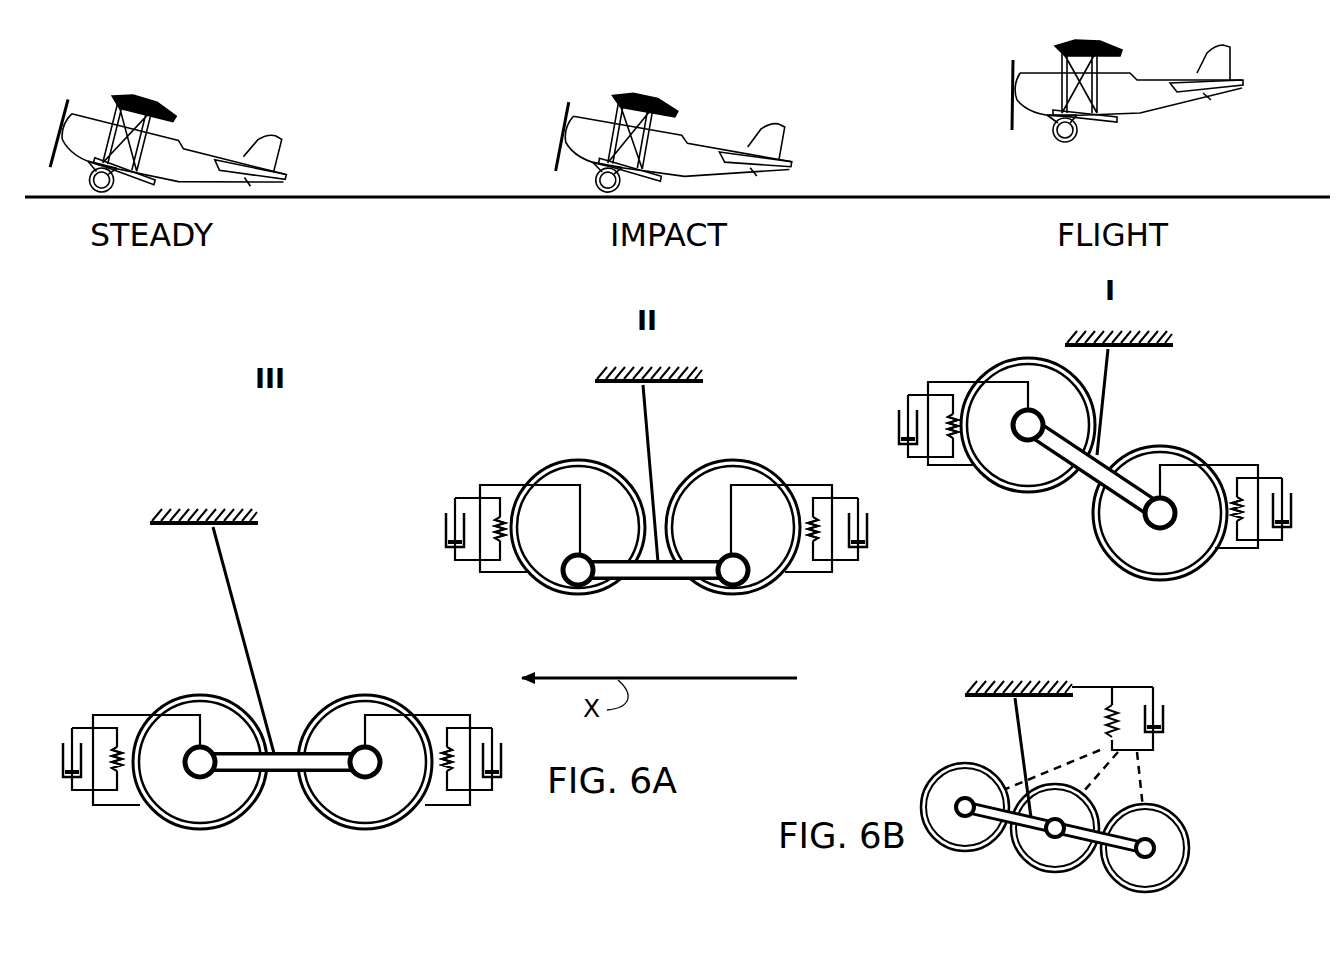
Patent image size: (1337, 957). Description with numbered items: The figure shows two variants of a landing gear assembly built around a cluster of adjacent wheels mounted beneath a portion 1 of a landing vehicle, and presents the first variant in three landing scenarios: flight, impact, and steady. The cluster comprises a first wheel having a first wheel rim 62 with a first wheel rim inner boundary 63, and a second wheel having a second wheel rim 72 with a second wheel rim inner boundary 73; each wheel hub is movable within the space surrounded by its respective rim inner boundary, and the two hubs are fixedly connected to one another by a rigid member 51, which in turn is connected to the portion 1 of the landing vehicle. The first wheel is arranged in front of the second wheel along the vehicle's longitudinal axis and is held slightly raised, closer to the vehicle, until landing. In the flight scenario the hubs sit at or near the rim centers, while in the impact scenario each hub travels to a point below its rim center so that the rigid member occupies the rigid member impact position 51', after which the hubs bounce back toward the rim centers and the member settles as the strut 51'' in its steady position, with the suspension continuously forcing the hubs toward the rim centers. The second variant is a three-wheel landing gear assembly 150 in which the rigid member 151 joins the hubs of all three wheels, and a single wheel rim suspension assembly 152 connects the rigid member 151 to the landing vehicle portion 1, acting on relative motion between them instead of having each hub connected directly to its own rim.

In FIG. 6B, the portion of a landing vehicle 1 is at (967, 690).
In FIG. 6A, the rigid member 51 is at (1121, 402).
In FIG. 6A, the rigid member impact position 51' is at (659, 524).
In FIG. 6A, the strut (steady position) 51'' is at (270, 642).
In FIG. 6A, the first wheel rim 62 is at (980, 470).
In FIG. 6A, the first wheel rim inner boundary 63 is at (1065, 466).
In FIG. 6A, the second wheel rim 72 is at (1158, 460).
In FIG. 6A, the second wheel rim inner boundary 73 is at (1130, 555).
In FIG. 6B, the 3-wheel landing gear assembly 150 is at (1013, 795).
In FIG. 6B, the rigid member 151 is at (1093, 818).
In FIG. 6B, the single wheel rim suspension assembly 152 is at (1173, 711).